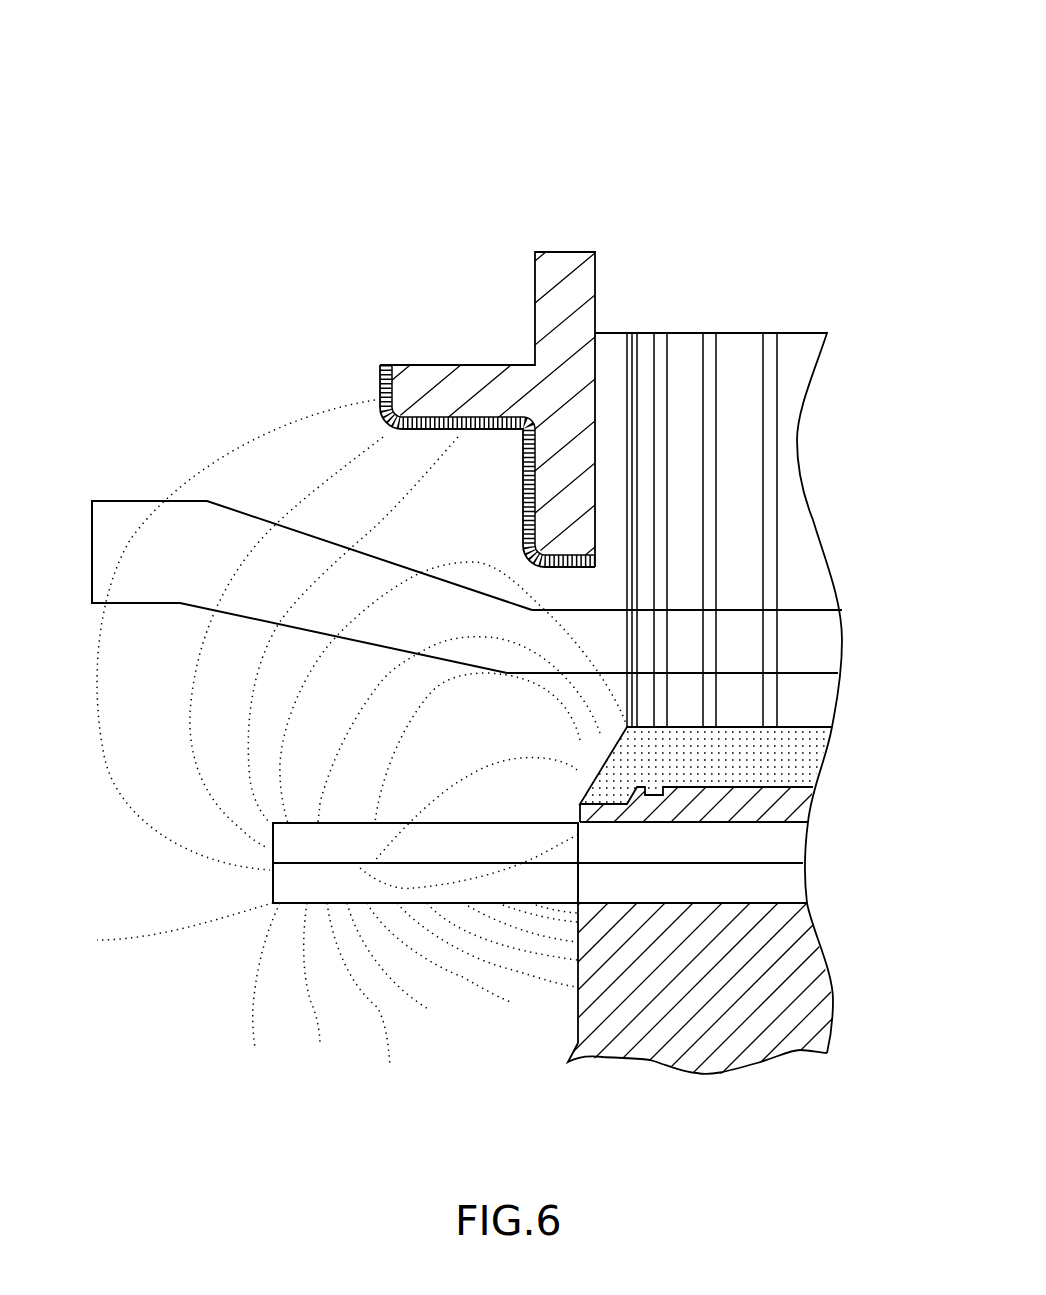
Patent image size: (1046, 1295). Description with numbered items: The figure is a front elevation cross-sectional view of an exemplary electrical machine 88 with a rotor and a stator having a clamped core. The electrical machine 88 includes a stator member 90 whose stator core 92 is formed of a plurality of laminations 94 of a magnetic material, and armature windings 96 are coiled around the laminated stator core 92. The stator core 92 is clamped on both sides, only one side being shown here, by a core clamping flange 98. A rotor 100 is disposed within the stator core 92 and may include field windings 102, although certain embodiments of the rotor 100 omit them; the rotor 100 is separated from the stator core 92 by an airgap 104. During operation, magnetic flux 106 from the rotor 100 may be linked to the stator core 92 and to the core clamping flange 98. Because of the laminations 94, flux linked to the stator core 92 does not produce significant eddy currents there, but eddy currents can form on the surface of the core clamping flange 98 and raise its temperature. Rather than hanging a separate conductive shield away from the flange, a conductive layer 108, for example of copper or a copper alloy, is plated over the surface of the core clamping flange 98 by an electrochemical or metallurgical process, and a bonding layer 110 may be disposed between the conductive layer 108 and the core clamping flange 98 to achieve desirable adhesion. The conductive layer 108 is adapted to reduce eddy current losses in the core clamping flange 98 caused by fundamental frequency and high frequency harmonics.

The electrical machine 88 is at (176, 66).
The stator member 90 is at (706, 217).
The stator core 92 is at (801, 333).
The laminations 94 is at (770, 550).
The armature windings 96 is at (117, 501).
The core clamping flange 98 is at (537, 292).
The rotor 100 is at (822, 960).
The field windings 102 is at (813, 763).
The airgap 104 is at (273, 903).
The magnetic flux 106 is at (88, 702).
The conductive layer 108 is at (378, 380).
The bonding layer 110 is at (388, 365).